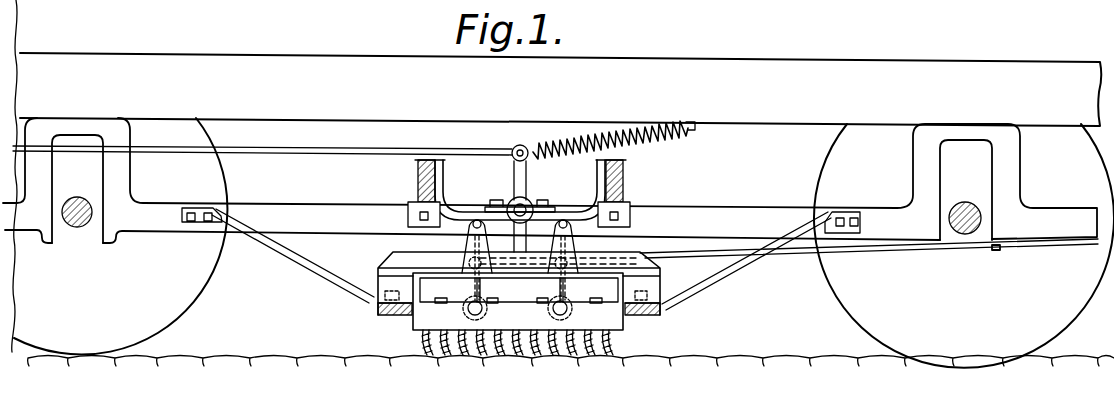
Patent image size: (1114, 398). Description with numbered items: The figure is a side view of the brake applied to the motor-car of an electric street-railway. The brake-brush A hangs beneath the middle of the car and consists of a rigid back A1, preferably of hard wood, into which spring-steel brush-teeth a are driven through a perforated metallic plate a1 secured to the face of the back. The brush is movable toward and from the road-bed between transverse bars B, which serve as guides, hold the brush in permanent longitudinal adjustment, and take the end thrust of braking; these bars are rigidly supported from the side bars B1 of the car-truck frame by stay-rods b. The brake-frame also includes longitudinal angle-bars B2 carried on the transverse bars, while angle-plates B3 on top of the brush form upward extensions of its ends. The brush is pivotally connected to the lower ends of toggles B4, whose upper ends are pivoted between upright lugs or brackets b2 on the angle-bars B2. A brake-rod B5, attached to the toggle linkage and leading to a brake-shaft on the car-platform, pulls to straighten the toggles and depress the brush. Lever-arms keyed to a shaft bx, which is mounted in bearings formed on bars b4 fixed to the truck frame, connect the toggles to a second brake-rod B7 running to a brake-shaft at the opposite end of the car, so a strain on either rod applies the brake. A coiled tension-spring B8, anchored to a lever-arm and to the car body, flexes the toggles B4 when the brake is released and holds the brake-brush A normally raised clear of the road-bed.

The brake-brush A is at (560, 187).
The rigid back A1 is at (623, 321).
The brush-teeth a is at (418, 337).
The metallic plate a1 is at (510, 330).
The transverse bars B is at (377, 308).
The side bars of the car-truck frame B1 is at (714, 195).
The angle-bars B2 is at (390, 262).
The angle-plates B3 is at (377, 305).
The toggles B4 is at (520, 292).
The brake-rod B5 is at (900, 250).
The brake-rod B7 is at (258, 144).
The coiled tension-spring B8 is at (590, 130).
The stay-rods b is at (302, 258).
The upright lugs or brackets b2 is at (417, 268).
The bars b4 is at (457, 212).
The shaft bx is at (527, 207).